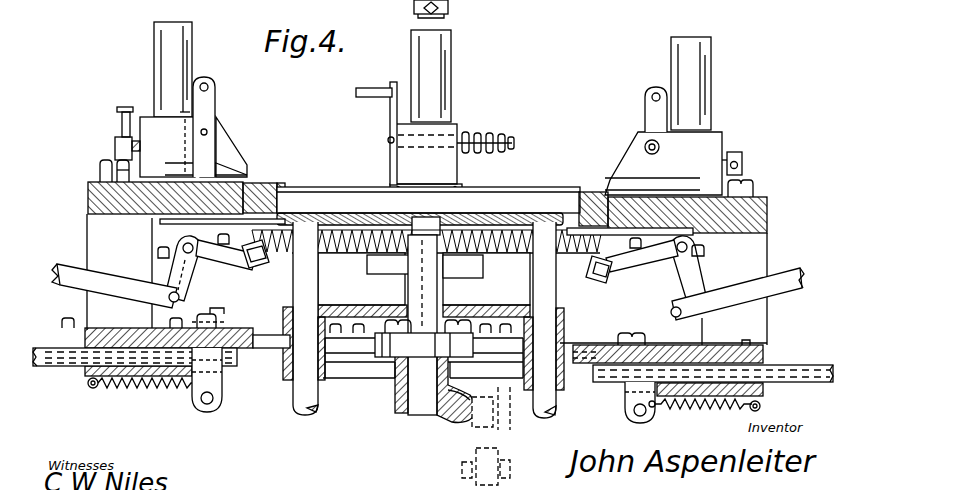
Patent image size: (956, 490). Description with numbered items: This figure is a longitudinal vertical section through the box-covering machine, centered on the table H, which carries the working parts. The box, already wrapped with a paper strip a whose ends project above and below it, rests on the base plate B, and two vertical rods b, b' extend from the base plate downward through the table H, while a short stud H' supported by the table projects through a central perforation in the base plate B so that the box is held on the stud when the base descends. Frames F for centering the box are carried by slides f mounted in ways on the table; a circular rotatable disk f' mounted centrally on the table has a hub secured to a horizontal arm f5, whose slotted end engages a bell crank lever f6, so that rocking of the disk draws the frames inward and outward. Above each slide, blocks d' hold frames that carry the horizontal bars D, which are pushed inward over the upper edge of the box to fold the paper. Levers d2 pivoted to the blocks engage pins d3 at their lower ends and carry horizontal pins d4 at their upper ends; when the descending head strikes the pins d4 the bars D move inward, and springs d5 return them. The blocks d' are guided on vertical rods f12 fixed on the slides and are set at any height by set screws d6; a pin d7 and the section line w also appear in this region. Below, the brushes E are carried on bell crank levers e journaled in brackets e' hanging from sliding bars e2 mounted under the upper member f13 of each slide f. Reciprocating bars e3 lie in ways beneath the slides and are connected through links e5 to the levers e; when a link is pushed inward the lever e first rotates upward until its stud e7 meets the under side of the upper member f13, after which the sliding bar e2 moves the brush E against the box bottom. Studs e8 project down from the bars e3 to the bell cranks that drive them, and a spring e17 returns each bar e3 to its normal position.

The vertical rods f12 is at (156, 44).
The blocks d' is at (446, 143).
The levers d2 is at (212, 104).
The pins d3 is at (236, 166).
The horizontal pins d4 is at (214, 84).
The springs d5 is at (494, 128).
The set screws d6 is at (115, 142).
The pin d7 is at (389, 141).
The wall w is at (182, 218).
The upper member f13 is at (95, 192).
The base plate B is at (270, 198).
The frames F is at (282, 195).
The bars D is at (300, 186).
The paper strip a is at (270, 180).
The slides f is at (424, 271).
The brushes E is at (255, 278).
The sliding bars e2 is at (158, 222).
The brackets e' is at (411, 270).
The bell crank levers e is at (435, 277).
The stud e7 is at (254, 262).
The link e5 is at (78, 268).
The vertical rod b is at (313, 320).
The vertical rod b' is at (555, 320).
The circular rotatable disk f' is at (435, 329).
The stud H' is at (424, 345).
The horizontal arm f5 is at (456, 412).
The bell crank lever f6 is at (470, 445).
The reciprocating bars e3 is at (57, 366).
The spring e17 is at (156, 392).
The studs e8 is at (222, 394).
The table H is at (714, 402).